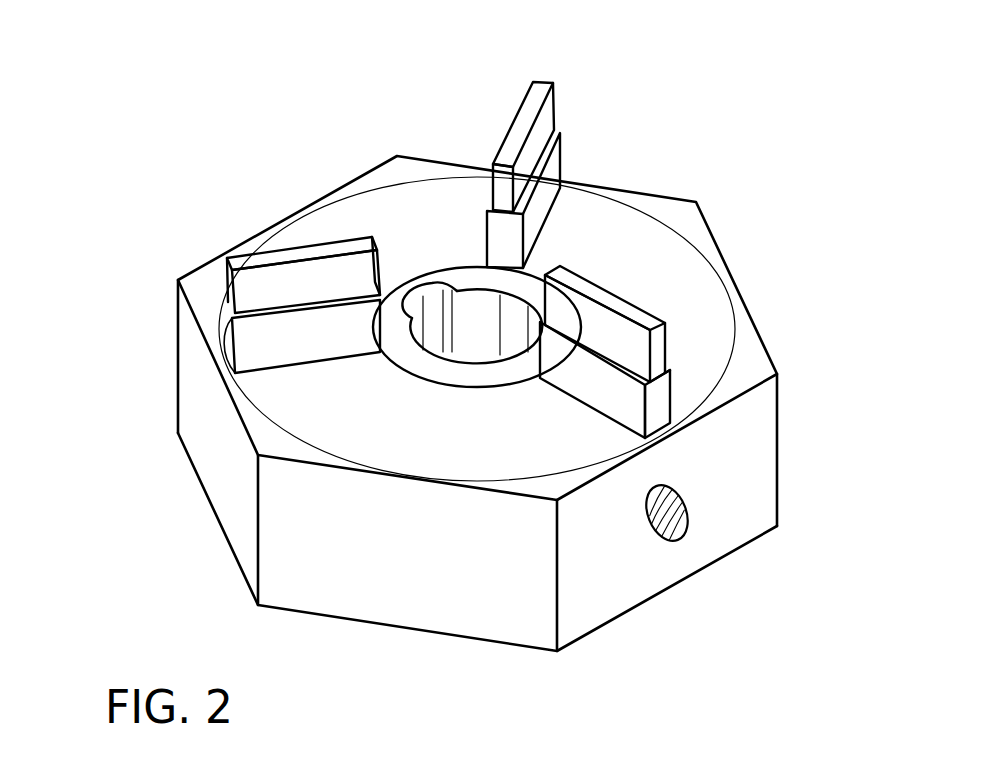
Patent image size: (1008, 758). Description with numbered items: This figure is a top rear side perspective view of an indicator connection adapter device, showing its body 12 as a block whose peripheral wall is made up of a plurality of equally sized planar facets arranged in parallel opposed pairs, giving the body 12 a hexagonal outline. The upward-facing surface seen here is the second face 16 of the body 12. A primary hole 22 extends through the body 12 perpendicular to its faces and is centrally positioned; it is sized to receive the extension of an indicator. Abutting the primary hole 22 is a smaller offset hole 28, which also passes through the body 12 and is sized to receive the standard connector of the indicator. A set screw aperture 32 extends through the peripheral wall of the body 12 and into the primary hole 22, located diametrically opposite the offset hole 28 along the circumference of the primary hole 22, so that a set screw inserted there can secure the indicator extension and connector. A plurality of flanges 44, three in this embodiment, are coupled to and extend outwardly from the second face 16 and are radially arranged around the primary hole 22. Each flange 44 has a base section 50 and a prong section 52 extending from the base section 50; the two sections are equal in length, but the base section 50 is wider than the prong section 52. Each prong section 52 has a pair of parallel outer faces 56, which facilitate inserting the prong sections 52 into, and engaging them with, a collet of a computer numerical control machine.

The body 12 is at (652, 183).
The second face 16 is at (695, 293).
The primary hole 22 is at (468, 337).
The offset hole 28 is at (414, 302).
The set screw aperture 32 is at (680, 523).
The flanges 44 is at (285, 371).
The base section 50 is at (247, 347).
The prong section 52 is at (265, 280).
The outer faces 56 is at (506, 123).